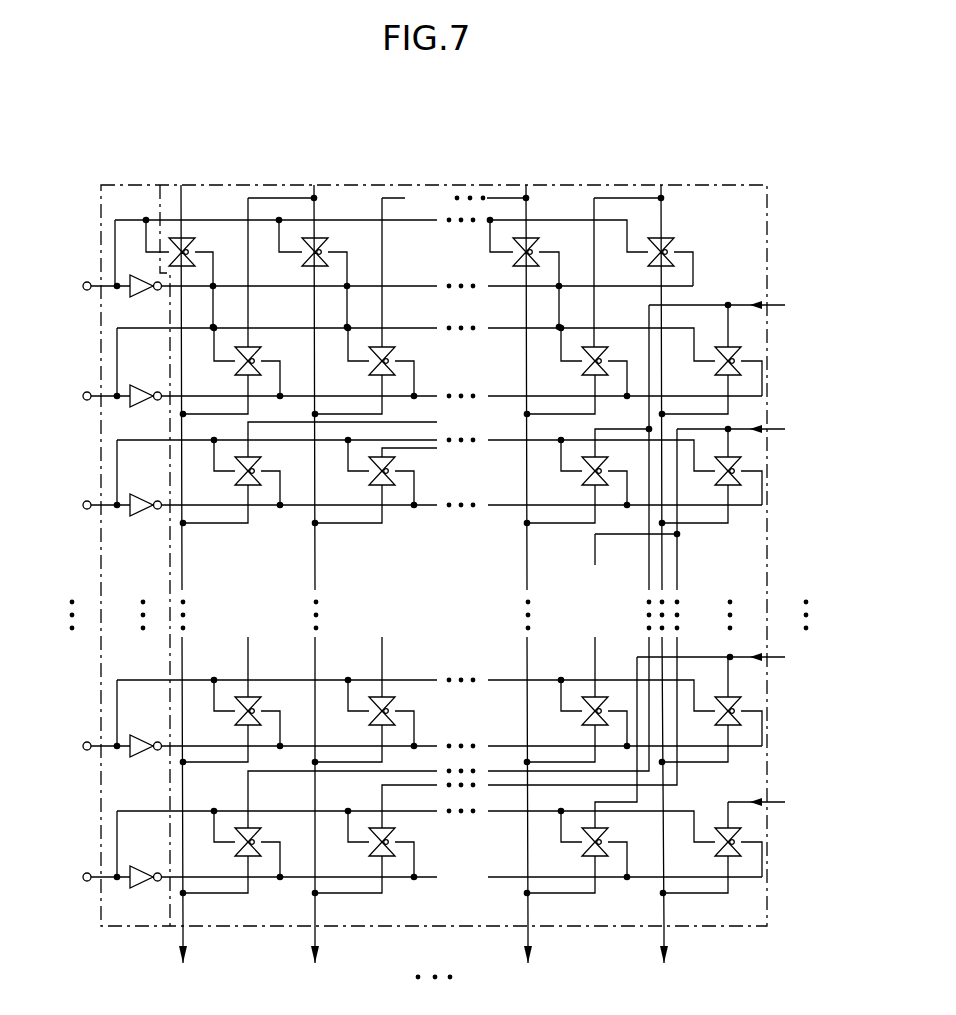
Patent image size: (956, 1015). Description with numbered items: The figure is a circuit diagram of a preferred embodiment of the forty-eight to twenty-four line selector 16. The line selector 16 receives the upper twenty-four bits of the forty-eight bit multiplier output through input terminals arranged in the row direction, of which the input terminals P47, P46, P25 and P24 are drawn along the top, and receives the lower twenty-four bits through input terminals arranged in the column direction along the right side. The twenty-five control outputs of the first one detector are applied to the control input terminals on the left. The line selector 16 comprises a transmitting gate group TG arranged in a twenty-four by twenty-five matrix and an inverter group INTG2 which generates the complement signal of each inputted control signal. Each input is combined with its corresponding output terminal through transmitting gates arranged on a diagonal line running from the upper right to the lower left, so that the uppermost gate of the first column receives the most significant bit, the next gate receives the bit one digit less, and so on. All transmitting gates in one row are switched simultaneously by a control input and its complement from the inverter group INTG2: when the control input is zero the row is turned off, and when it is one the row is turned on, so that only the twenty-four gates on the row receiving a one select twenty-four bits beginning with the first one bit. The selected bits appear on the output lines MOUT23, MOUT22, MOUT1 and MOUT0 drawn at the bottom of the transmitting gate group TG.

The line selector 16 is at (726, 951).
The inverter group INTG2 is at (117, 188).
The transmitting gate group TG is at (743, 198).
The input terminal P47 is at (182, 185).
The input terminal P46 is at (315, 185).
The input terminal P25 is at (526, 185).
The input terminal P24 is at (661, 185).
The output line MOUT23 is at (178, 959).
The output line MOUT22 is at (308, 959).
The output line MOUT1 is at (531, 959).
The output line MOUT0 is at (664, 959).